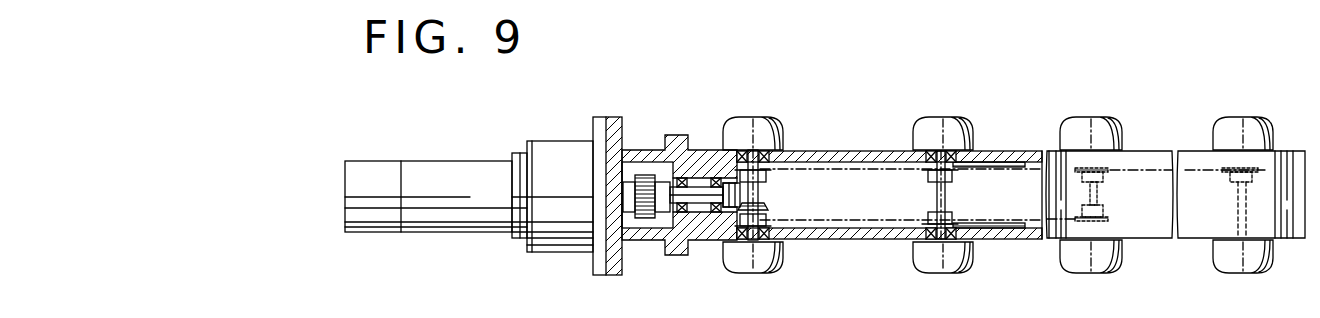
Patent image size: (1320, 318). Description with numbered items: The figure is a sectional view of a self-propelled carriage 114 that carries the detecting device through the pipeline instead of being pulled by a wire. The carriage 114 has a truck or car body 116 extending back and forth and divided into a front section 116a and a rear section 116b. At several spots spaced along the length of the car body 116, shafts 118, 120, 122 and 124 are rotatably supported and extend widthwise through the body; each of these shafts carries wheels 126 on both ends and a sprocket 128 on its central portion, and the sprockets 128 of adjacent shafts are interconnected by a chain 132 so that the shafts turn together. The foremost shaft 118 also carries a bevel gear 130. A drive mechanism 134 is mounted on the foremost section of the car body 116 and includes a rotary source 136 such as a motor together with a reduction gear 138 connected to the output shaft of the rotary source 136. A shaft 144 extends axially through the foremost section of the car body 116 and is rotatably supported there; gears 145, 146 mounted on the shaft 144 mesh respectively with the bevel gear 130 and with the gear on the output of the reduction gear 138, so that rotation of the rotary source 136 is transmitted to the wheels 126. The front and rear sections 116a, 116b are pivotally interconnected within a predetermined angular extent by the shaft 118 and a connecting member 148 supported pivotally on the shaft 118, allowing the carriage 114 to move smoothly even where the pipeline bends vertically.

The self-propelled carriage 114 is at (577, 131).
The car body 116 is at (892, 150).
The front section 116a is at (873, 239).
The rear section 116b is at (1287, 230).
The foremost shaft 118 is at (768, 223).
The shaft 120 is at (935, 193).
The shaft 122 is at (1100, 195).
The shaft 124 is at (1240, 210).
The wheels 126 is at (770, 265).
The sprockets 128 is at (766, 178).
The bevel gear 130 is at (768, 205).
The chain 132 is at (829, 167).
The drive mechanism 134 is at (568, 252).
The rotary source 136 is at (434, 220).
The reduction gear 138 is at (538, 235).
The shaft 144 is at (699, 205).
The gear 145 is at (728, 190).
The gear 146 is at (645, 189).
The connecting member 148 is at (1015, 160).